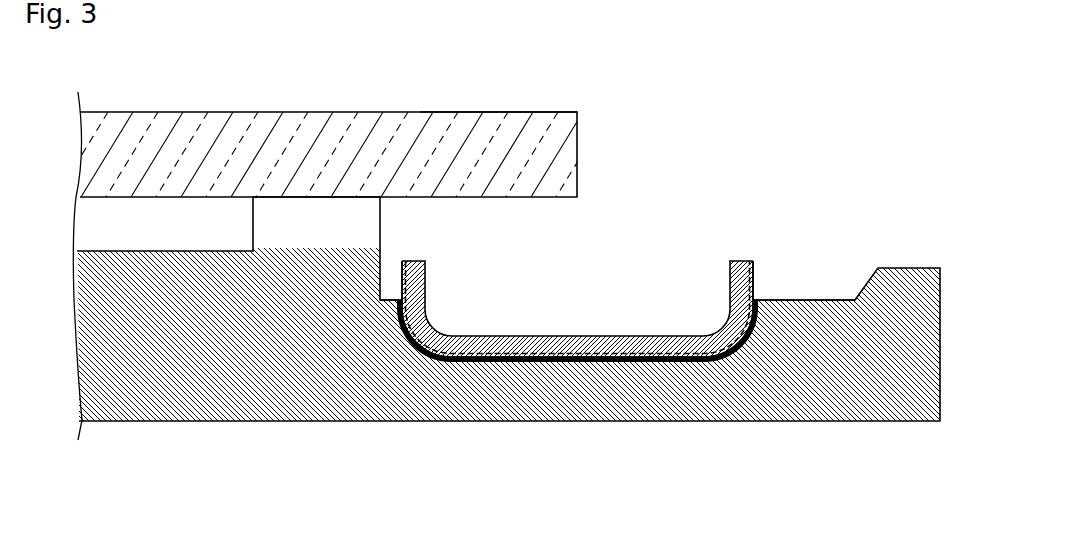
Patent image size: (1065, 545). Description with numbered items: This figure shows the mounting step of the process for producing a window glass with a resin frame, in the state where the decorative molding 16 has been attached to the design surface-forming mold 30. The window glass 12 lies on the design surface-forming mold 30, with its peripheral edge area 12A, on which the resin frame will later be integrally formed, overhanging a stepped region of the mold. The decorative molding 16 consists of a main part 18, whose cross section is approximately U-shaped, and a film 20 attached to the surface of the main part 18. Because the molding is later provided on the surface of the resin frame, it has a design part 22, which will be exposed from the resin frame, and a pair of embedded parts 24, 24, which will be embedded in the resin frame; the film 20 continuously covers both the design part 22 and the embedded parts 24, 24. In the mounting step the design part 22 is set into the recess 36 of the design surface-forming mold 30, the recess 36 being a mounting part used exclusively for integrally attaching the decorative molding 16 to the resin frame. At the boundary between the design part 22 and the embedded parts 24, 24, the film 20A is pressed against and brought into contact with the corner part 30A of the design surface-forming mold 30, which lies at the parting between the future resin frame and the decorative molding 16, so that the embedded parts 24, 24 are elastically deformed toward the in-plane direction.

The window glass 12 is at (221, 112).
The peripheral edge area 12A is at (497, 112).
The decorative molding 16 is at (577, 342).
The main part 18 is at (548, 336).
The film 20 is at (577, 365).
The film at boundary 20A is at (401, 303).
The design part 22 is at (649, 361).
The embedded parts 24 is at (424, 270).
The design surface-forming mold 30 is at (532, 349).
The corner part 30A is at (403, 300).
The recess 36 is at (606, 355).